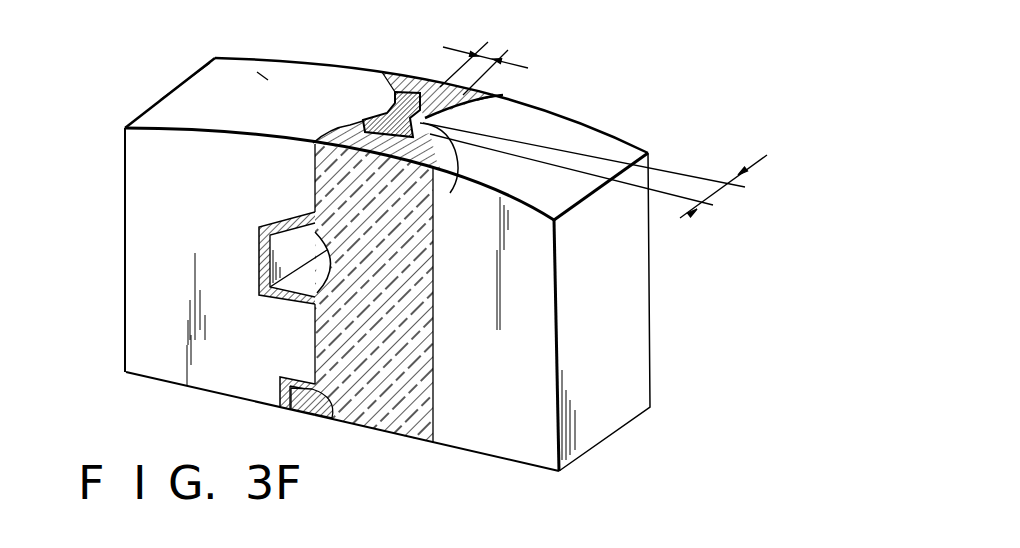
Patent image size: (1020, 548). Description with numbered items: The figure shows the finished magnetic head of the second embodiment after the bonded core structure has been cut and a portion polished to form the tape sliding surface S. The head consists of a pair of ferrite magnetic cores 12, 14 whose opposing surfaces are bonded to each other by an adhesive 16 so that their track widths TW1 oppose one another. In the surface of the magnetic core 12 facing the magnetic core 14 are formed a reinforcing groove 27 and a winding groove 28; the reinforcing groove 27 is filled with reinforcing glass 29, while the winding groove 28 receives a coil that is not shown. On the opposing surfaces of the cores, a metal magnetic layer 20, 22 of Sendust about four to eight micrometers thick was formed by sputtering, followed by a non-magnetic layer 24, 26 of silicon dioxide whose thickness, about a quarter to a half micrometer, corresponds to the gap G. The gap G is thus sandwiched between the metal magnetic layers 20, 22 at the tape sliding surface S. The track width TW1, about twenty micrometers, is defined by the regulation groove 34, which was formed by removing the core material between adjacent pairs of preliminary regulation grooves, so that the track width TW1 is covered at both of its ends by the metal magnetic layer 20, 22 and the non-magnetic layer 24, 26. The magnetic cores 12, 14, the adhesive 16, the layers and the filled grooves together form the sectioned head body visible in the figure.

The magnetic core 12 is at (153, 278).
The magnetic core 14 is at (623, 353).
The adhesive 16 is at (315, 183).
The metal magnetic layer 20 is at (393, 113).
The metal magnetic layer 22 is at (453, 194).
The non-magnetic layer 24 is at (353, 124).
The non-magnetic layer 26 is at (500, 99).
The reinforcing groove 27 is at (280, 397).
The winding groove 28 is at (305, 289).
The reinforcing glass 29 is at (308, 416).
The regulation groove 34 is at (398, 82).
The tape sliding surface S is at (190, 111).
The gap G is at (495, 47).
The track width TW1 is at (712, 190).